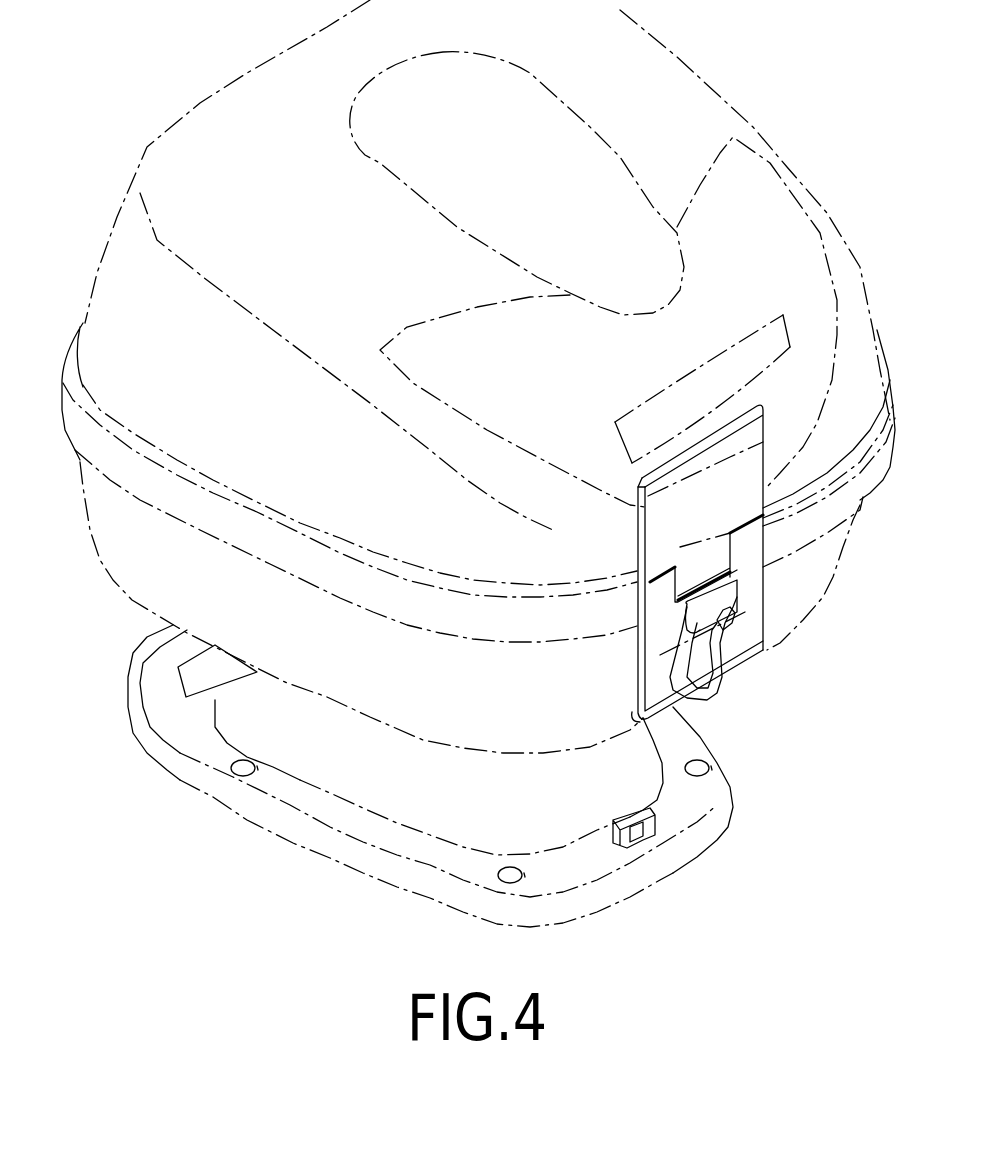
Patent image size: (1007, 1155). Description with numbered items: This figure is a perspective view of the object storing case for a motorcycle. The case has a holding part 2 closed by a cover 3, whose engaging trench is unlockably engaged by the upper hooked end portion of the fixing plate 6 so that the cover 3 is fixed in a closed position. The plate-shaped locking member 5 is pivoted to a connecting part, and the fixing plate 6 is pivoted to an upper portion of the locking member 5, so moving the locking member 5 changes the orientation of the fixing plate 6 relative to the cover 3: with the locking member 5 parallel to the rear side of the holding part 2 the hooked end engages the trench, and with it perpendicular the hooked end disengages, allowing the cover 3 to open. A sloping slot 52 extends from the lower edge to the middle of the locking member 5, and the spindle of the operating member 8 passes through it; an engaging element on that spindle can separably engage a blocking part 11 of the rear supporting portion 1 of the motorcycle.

The rear supporting portion 1 is at (410, 847).
The holding part 2 is at (137, 580).
The cover 3 is at (687, 87).
The locking member 5 is at (750, 585).
The sloping slot 52 is at (727, 640).
The fixing plate 6 is at (763, 433).
The operating member 8 is at (720, 683).
The blocking part 11 is at (643, 840).